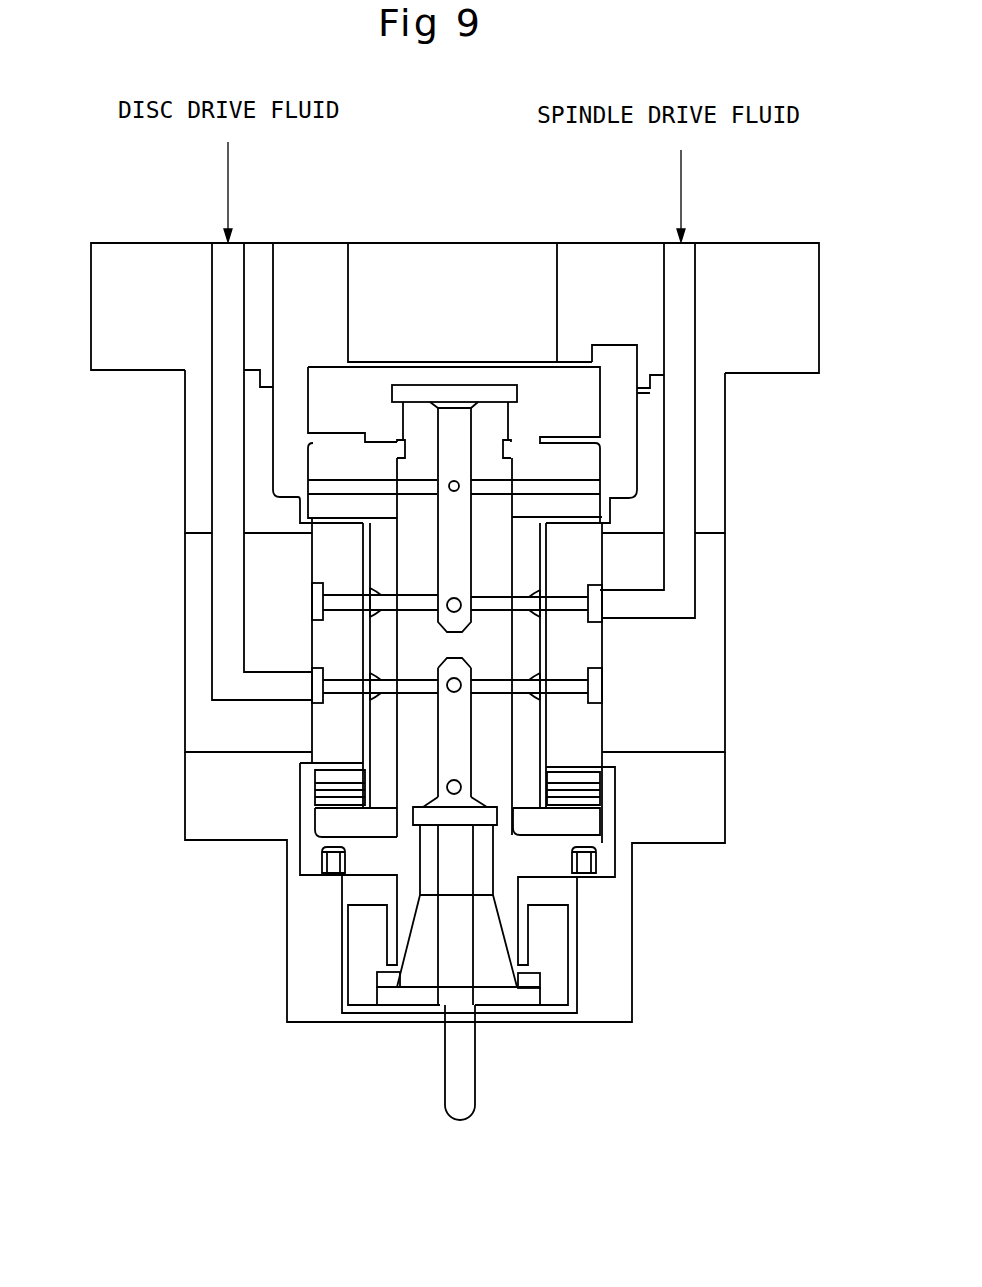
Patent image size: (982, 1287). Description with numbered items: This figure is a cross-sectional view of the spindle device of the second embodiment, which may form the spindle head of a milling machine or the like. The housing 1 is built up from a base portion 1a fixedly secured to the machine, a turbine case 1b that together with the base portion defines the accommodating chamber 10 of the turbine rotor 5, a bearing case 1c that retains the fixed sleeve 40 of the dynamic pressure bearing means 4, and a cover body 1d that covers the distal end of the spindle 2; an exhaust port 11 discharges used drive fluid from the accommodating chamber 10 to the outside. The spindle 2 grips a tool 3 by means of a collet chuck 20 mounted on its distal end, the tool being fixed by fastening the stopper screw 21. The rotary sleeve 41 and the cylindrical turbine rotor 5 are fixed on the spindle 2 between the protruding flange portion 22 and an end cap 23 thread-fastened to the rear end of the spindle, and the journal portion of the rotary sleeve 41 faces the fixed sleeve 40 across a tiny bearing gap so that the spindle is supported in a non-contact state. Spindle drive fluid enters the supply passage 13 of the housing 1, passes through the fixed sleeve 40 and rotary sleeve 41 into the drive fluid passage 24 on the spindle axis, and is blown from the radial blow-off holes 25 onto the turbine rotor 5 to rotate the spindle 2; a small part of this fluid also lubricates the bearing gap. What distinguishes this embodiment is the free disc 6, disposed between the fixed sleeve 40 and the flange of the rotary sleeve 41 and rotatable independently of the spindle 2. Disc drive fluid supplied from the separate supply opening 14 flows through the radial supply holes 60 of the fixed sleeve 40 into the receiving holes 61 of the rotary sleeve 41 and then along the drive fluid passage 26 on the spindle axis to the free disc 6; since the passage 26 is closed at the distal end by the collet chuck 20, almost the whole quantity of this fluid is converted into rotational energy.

The housing 1 is at (150, 509).
The base portion 1a is at (773, 365).
The turbine case 1b is at (710, 507).
The bearing case 1c is at (713, 692).
The cover body 1d is at (620, 995).
The spindle 2 is at (367, 880).
The tool 3 is at (470, 1085).
The dynamic pressure bearing means 4 is at (300, 735).
The turbine rotor 5 is at (323, 465).
The free disc 6 is at (323, 797).
The accommodating chamber 10 is at (613, 357).
The exhaust port 11 is at (318, 243).
The supply passage 13 is at (684, 318).
The supply opening 14 is at (215, 316).
The collet chuck 20 is at (423, 978).
The stopper screw 21 is at (365, 997).
The flange portion 22 is at (543, 858).
The end cap 23 is at (541, 383).
The drive fluid passage 24 is at (443, 547).
The blow-off holes 25 is at (415, 487).
The drive fluid passage 26 is at (466, 753).
The fixed sleeve 40 is at (320, 722).
The rotary sleeve 41 is at (530, 722).
The supply holes 60 is at (343, 683).
The receiving holes 61 is at (520, 683).